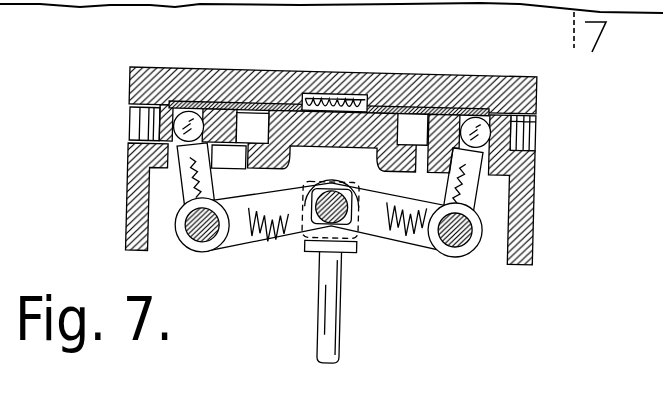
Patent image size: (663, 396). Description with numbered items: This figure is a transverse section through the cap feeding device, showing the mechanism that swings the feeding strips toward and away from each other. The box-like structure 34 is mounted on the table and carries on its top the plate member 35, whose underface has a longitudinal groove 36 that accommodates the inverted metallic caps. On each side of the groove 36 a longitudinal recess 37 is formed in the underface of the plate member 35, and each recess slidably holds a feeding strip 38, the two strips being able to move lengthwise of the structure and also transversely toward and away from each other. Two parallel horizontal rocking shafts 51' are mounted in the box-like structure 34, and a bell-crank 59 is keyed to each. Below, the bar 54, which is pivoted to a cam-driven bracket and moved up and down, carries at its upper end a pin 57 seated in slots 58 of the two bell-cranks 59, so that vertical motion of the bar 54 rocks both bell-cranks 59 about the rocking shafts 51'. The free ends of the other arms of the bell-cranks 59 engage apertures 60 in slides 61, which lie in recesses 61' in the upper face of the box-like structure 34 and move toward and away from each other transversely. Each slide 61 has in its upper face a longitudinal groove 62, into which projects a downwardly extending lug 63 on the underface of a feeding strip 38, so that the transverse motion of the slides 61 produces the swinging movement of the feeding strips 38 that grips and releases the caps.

The box-like structure 34 is at (538, 190).
The plate member 35 is at (539, 95).
The longitudinal groove 36 is at (350, 100).
The longitudinal recess 37 is at (175, 107).
The feeding strip 38 is at (252, 106).
The rocking shaft 51' is at (334, 253).
The bar 54 is at (340, 323).
The pin 57 is at (322, 225).
The slot 58 is at (320, 190).
The bell-crank 59 is at (245, 240).
The aperture 60 is at (130, 147).
The slide 61 is at (420, 120).
The recess 61' is at (348, 89).
The longitudinal groove 62 is at (447, 132).
The lug 63 is at (216, 134).